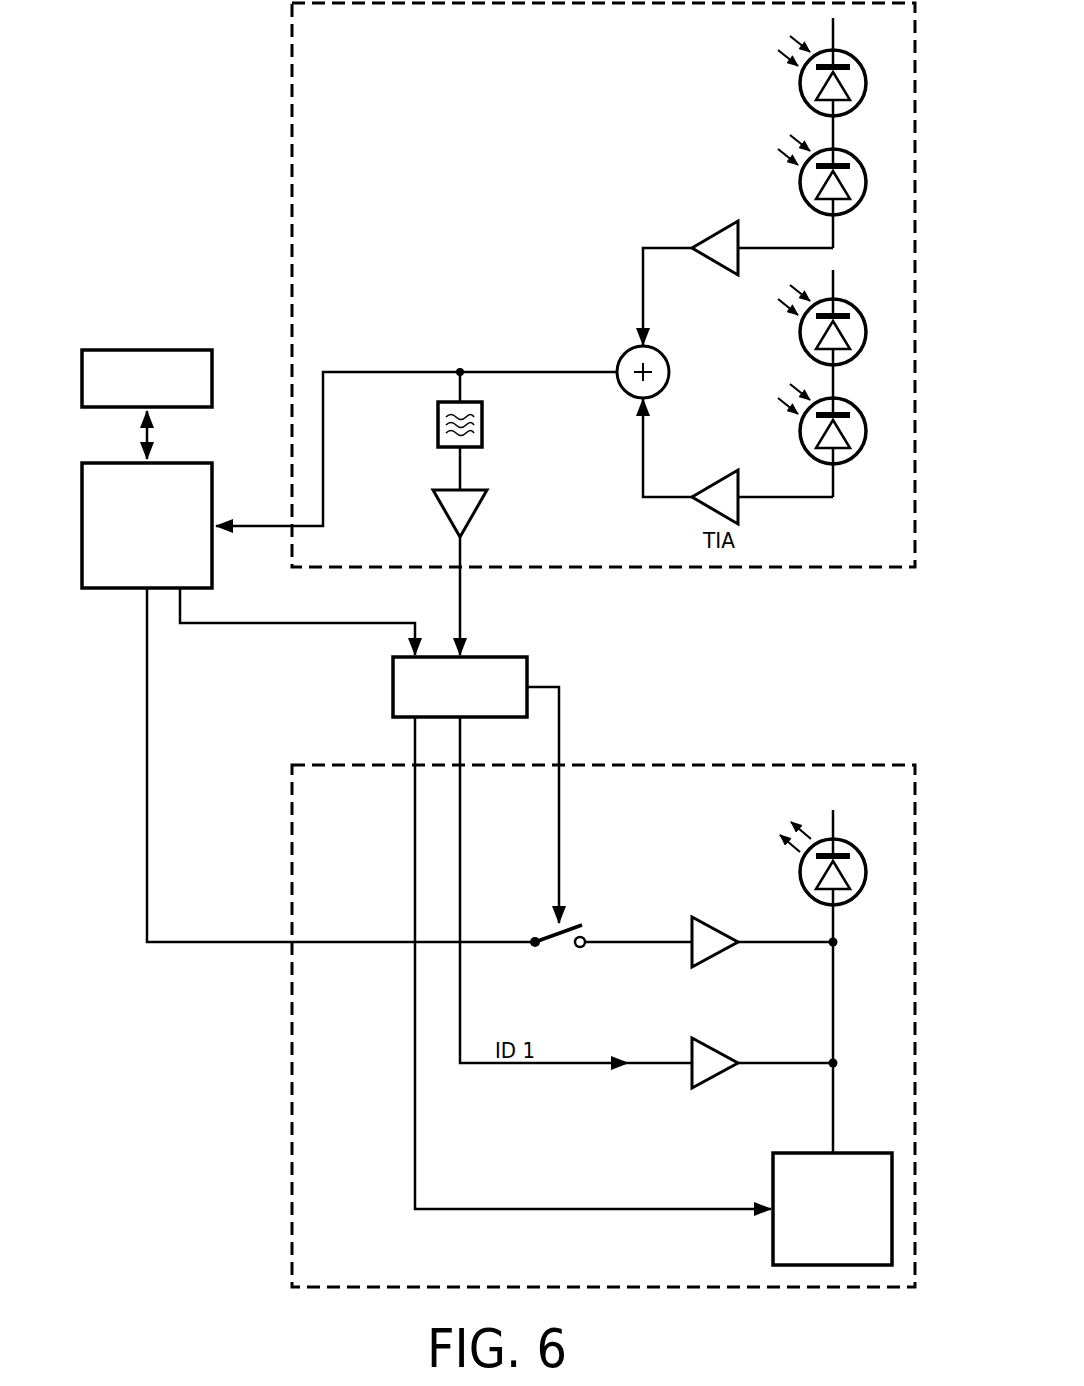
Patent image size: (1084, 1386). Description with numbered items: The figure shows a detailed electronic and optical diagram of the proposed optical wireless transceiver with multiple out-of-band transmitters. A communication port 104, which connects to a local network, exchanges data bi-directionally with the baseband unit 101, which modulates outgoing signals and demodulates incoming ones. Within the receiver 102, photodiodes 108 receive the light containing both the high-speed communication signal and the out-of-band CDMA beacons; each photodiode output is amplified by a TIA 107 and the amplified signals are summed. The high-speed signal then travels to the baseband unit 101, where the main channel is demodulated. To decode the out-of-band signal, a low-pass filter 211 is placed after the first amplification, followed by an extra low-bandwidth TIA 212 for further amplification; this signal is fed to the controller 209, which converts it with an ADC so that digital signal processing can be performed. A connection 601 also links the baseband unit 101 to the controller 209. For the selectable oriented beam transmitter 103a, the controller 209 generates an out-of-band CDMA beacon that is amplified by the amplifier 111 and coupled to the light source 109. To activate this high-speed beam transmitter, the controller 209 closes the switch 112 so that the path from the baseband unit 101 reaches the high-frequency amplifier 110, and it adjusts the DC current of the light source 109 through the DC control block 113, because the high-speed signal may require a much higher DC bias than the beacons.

The baseband unit 101 is at (105, 590).
The receiver 102 is at (292, 62).
The selectable oriented beam transmitter 103a is at (292, 833).
The communication port 104 is at (106, 350).
The TIA 107 is at (715, 238).
The photodiode 108 is at (800, 80).
The light source 109 is at (800, 870).
The high-frequency amplifier 110 is at (692, 959).
The amplifier 111 is at (692, 1081).
The switch 112 is at (549, 952).
The DC control block 113 is at (773, 1237).
The controller 209 is at (393, 692).
The low-pass filter 211 is at (438, 425).
The low-bandwidth TIA 212 is at (438, 513).
The control connection from baseband to controller 601 is at (222, 624).